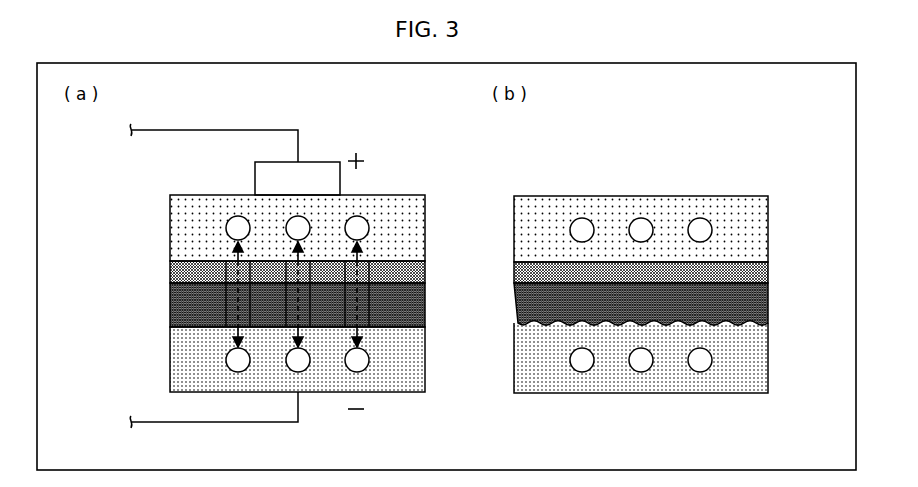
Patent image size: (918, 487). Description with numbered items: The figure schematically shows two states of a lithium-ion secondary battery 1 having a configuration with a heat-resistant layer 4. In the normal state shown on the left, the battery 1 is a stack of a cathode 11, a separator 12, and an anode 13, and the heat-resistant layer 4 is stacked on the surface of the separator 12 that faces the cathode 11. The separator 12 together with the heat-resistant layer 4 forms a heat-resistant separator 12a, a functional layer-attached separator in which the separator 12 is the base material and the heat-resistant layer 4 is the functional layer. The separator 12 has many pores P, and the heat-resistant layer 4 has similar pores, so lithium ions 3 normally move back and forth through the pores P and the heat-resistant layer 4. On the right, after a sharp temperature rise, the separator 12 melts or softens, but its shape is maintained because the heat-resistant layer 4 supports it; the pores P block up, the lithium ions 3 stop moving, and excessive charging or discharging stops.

The lithium-ion secondary battery 1 is at (82, 197).
The lithium ions 3 is at (360, 219).
The heat-resistant layer 4 is at (171, 271).
The cathode 11 is at (171, 229).
The separator 12 is at (170, 311).
The heat-resistant separator 12a is at (129, 262).
The anode 13 is at (170, 361).
The pores P is at (362, 301).